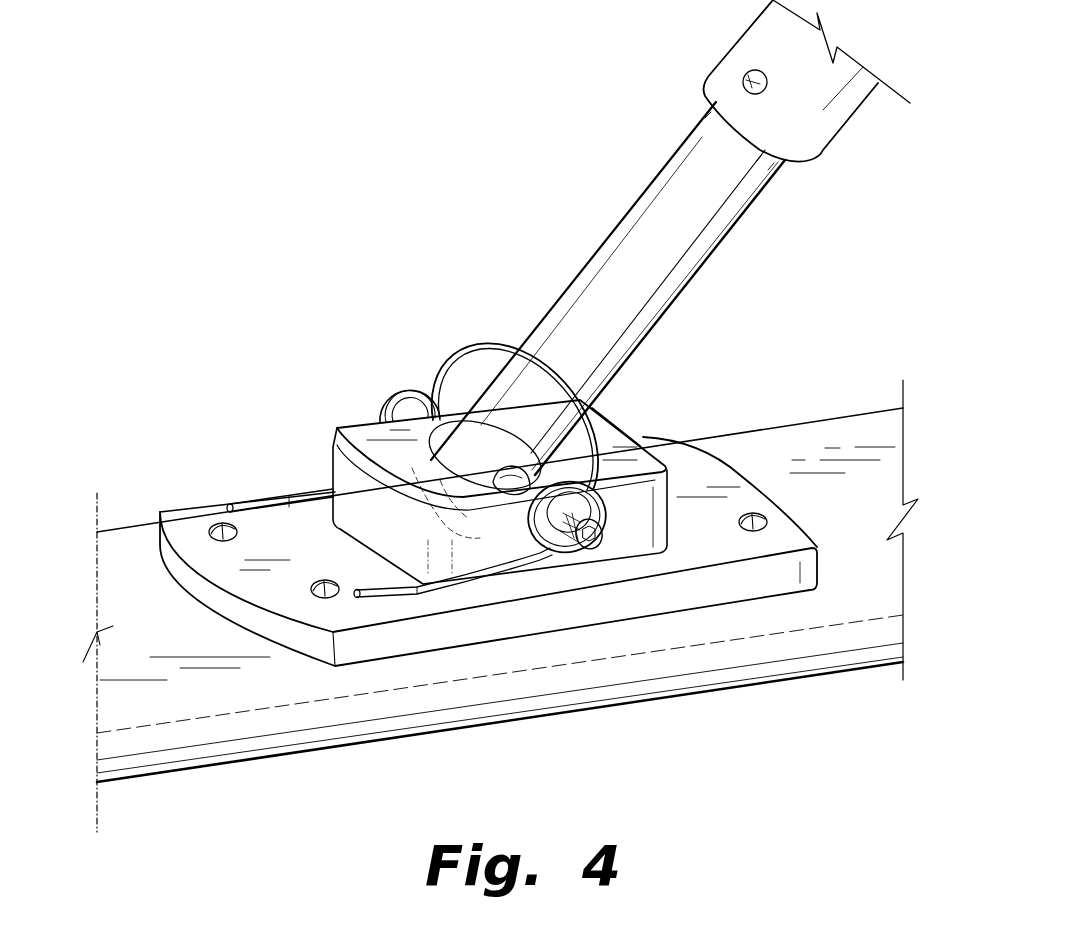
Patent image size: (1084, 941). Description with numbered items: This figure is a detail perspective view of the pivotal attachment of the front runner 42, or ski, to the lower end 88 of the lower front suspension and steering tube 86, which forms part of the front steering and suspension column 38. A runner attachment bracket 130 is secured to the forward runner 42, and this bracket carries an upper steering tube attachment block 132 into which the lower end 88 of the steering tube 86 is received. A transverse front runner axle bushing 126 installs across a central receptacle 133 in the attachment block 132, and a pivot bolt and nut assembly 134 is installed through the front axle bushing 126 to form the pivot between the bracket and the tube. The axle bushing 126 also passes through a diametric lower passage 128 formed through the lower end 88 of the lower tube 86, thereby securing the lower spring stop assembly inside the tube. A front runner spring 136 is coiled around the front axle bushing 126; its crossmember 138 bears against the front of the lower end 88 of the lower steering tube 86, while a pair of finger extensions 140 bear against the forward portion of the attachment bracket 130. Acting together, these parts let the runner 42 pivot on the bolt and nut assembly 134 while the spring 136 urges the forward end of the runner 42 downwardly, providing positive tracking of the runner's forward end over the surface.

The mounting assembly 38 is at (588, 143).
The front runner 42 is at (262, 727).
The lower tube 86 is at (748, 211).
The lower end 88 is at (333, 470).
The front runner axle bushing 126 is at (438, 395).
The diametric lower passage 128 is at (518, 474).
The runner attachment bracket 130 is at (223, 597).
The upper steering tube attachment block 132 is at (607, 410).
The central receptacle 133 is at (605, 442).
The pivot bolt and nut assembly 134 is at (606, 538).
The front runner spring 136 is at (385, 404).
The crossmember 138 is at (507, 343).
The finger extensions 140 is at (380, 588).